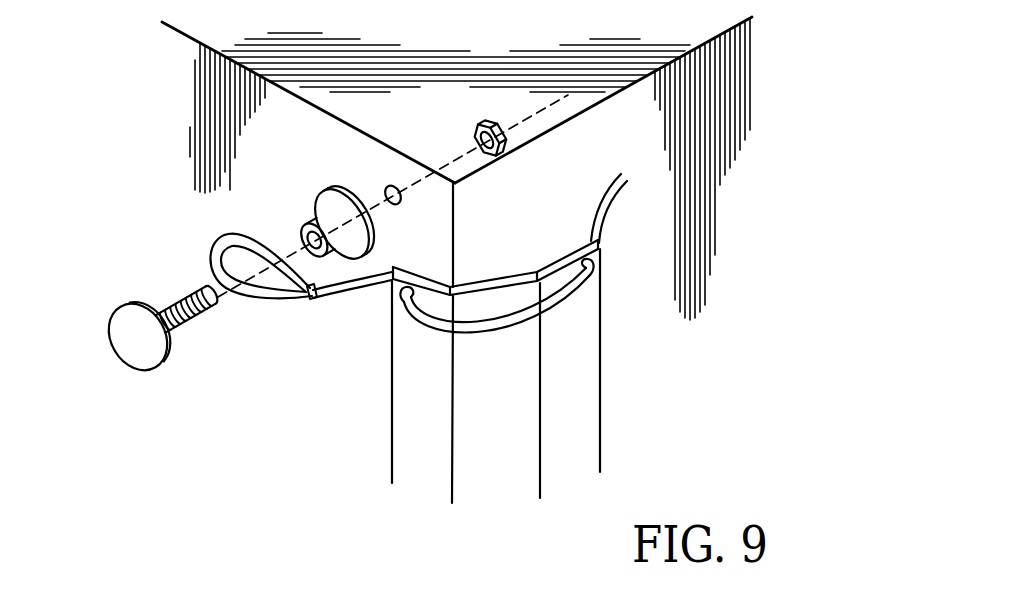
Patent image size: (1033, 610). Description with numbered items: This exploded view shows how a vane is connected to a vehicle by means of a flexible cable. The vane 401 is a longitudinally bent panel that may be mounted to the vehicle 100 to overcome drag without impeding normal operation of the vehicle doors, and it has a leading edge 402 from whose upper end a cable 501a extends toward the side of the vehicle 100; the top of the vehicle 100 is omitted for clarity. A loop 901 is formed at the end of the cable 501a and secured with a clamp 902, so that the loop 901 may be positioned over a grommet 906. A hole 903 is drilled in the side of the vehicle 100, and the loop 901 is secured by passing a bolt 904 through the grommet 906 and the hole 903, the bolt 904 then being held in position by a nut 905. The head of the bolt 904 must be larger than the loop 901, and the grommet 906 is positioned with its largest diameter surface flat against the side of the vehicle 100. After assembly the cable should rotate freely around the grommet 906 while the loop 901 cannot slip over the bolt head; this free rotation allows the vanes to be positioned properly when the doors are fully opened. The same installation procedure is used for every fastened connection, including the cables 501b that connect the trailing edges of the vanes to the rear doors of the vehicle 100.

The vehicle 100 is at (190, 97).
The left vane 401 is at (517, 410).
The leading edge 402 is at (395, 458).
The cable 501a is at (352, 298).
The cable 501b is at (607, 184).
The loop 901 is at (216, 254).
The clamp 902 is at (311, 300).
The hole 903 is at (386, 192).
The bolt 904 is at (139, 358).
The nut 905 is at (472, 136).
The grommet 906 is at (317, 203).